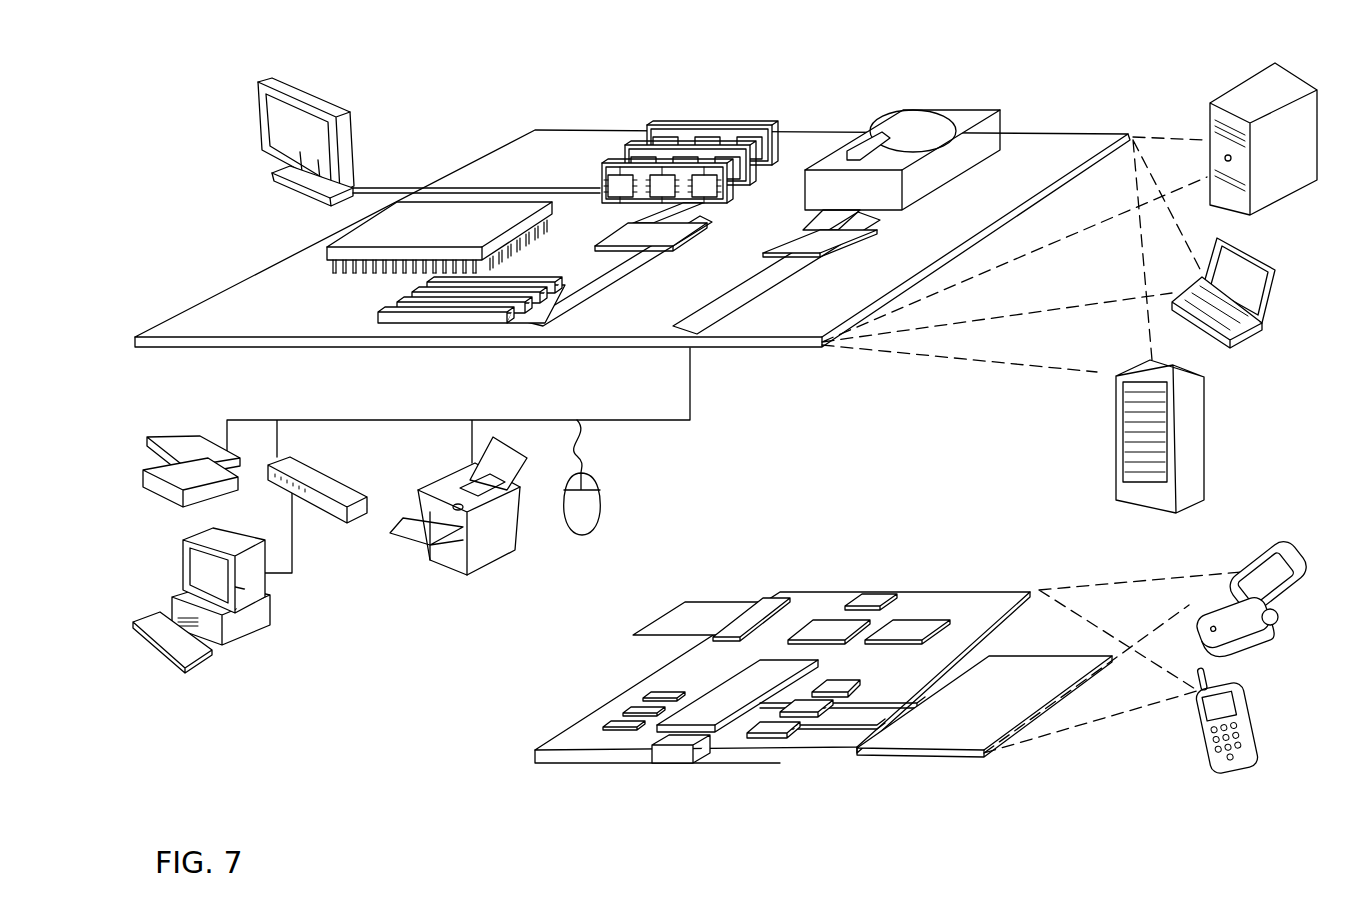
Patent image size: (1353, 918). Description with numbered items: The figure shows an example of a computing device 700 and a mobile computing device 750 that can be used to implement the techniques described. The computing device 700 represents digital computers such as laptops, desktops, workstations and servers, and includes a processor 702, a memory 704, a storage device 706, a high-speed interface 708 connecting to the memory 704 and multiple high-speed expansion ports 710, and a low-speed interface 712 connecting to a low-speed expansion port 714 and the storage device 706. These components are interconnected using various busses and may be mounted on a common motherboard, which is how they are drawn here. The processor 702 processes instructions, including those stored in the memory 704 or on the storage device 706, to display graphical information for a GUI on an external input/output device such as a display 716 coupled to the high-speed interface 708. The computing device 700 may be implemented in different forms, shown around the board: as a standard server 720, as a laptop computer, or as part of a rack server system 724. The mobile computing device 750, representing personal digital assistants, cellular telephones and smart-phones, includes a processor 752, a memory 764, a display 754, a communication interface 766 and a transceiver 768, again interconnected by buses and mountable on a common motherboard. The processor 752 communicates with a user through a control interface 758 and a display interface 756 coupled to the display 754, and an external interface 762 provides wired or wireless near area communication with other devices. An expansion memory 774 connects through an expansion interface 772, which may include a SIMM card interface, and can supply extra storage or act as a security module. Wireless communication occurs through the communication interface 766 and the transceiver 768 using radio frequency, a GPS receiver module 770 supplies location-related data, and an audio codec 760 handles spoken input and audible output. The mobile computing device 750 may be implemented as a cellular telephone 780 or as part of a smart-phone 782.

The computing device 700 is at (455, 105).
The processor 702 is at (327, 252).
The memory 704 is at (660, 124).
The storage device 706 is at (893, 116).
The high-speed interface 708 is at (630, 236).
The high-speed expansion ports 710 is at (403, 309).
The low-speed interface 712 is at (804, 242).
The low-speed expansion port 714 is at (692, 340).
The display 716 is at (262, 85).
The standard server 720 is at (1210, 122).
The rack server system 724 is at (1116, 462).
The mobile computing device 750 is at (515, 758).
The processor 752 is at (710, 720).
The display 754 is at (950, 738).
The display interface 756 is at (782, 738).
The control interface 758 is at (818, 714).
The audio codec 760 is at (841, 688).
The external interface 762 is at (678, 745).
The memory 764 is at (627, 712).
The communication interface 766 is at (830, 628).
The transceiver 768 is at (908, 628).
The GPS receiver module 770 is at (883, 600).
The expansion interface 772 is at (770, 605).
The expansion memory 774 is at (690, 603).
The cellular telephone 780 is at (1257, 550).
The cellular phone 782 is at (1198, 724).